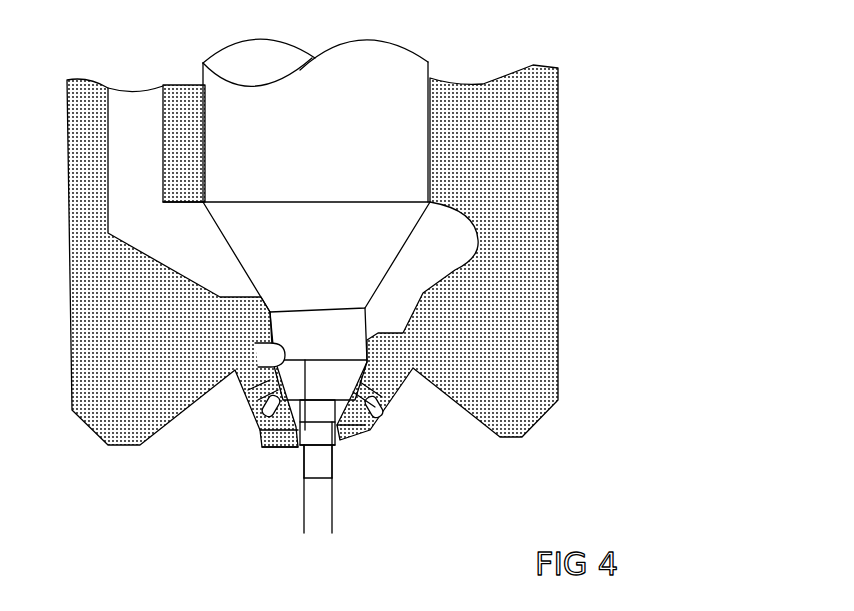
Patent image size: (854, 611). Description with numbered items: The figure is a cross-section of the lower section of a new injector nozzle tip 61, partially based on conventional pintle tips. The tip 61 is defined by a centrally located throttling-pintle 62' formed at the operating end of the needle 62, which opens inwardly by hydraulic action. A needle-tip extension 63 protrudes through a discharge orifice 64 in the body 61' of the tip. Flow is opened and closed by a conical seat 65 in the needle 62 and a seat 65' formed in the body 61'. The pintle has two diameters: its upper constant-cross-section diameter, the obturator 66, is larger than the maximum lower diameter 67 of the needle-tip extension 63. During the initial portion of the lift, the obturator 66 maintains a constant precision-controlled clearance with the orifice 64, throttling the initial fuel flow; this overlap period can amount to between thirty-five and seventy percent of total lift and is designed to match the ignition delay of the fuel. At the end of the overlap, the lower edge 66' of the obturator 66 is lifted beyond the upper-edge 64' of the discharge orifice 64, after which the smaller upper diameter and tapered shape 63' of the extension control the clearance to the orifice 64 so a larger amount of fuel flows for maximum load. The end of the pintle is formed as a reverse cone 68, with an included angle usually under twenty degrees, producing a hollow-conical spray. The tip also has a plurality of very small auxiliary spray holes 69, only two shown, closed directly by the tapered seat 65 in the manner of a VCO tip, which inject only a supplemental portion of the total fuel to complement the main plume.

The nozzle tip 61 is at (428, 263).
The body 61' is at (510, 252).
The needle 62 is at (449, 219).
The throttling-pintle 62' is at (504, 411).
The needle-tip extension 63 is at (428, 489).
The tapered shape 63' is at (234, 517).
The discharge orifice 64 is at (381, 453).
The upper-edge of the discharge orifice 64' is at (179, 403).
The conical seat 65 is at (529, 327).
The seat 65' is at (198, 427).
The obturator 66 is at (223, 491).
The lower edge of the obturator 66' is at (276, 508).
The maximum lower diameter of the needle-tip extension 67 is at (393, 503).
The reverse cone 68 is at (336, 468).
The auxiliary spray holes 69 is at (366, 435).